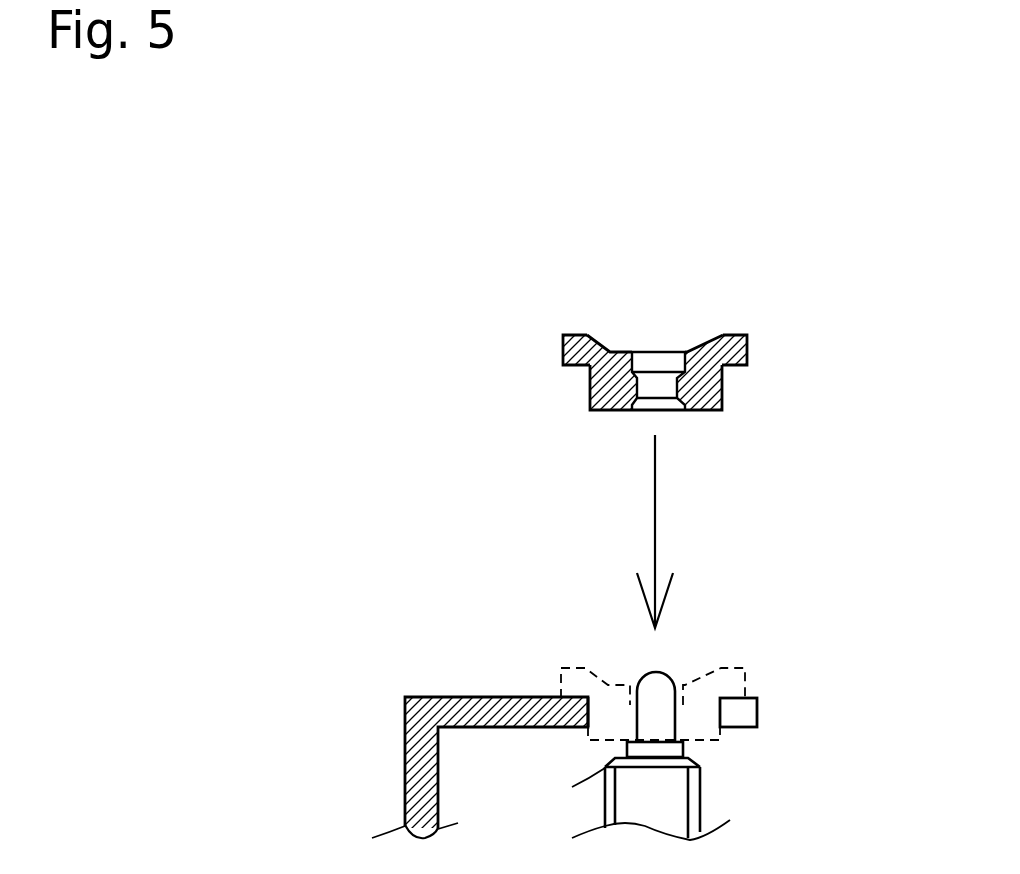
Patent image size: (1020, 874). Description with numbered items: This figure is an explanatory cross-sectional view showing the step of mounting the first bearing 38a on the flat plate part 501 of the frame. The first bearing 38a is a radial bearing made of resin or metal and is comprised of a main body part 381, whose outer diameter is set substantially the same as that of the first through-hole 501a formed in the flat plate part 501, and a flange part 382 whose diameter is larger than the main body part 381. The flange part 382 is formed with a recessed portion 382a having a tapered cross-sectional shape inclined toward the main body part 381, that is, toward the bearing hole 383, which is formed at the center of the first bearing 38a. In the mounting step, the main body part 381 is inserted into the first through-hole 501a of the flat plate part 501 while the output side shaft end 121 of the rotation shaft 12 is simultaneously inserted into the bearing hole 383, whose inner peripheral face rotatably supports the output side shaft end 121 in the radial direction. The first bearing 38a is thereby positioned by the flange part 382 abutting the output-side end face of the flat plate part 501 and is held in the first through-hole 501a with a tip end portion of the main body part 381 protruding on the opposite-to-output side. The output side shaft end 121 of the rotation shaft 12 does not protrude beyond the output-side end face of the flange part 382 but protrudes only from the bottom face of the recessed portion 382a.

The first bearing 38a is at (510, 322).
The main body part 381 is at (724, 392).
The flange part 382 is at (749, 345).
The recessed portion 382a is at (690, 352).
The bearing hole 383 is at (652, 352).
The flat plate part 501 is at (478, 695).
The first through-hole 501a is at (593, 712).
The output side shaft end 121 is at (648, 722).
The rotation shaft 12 is at (677, 800).